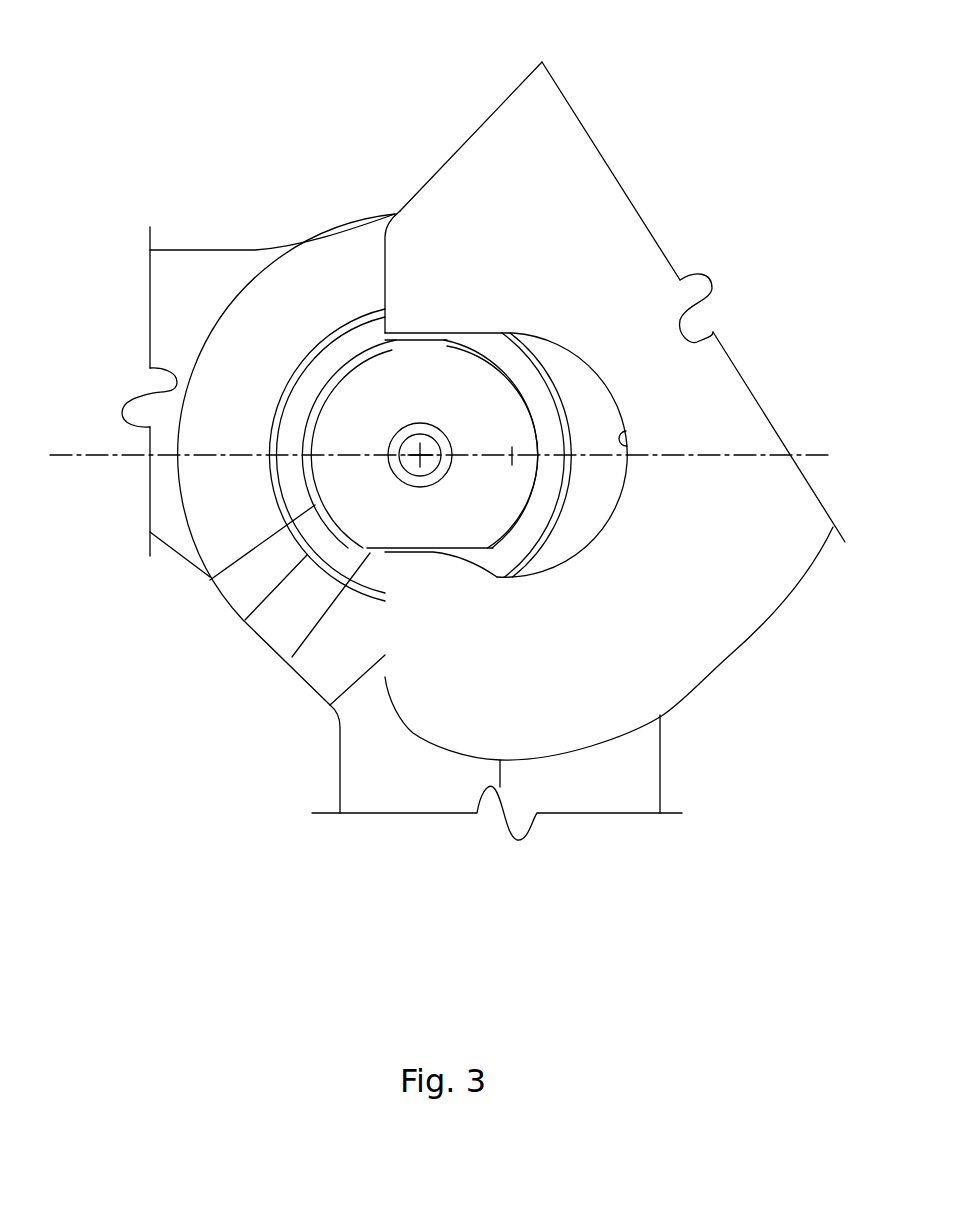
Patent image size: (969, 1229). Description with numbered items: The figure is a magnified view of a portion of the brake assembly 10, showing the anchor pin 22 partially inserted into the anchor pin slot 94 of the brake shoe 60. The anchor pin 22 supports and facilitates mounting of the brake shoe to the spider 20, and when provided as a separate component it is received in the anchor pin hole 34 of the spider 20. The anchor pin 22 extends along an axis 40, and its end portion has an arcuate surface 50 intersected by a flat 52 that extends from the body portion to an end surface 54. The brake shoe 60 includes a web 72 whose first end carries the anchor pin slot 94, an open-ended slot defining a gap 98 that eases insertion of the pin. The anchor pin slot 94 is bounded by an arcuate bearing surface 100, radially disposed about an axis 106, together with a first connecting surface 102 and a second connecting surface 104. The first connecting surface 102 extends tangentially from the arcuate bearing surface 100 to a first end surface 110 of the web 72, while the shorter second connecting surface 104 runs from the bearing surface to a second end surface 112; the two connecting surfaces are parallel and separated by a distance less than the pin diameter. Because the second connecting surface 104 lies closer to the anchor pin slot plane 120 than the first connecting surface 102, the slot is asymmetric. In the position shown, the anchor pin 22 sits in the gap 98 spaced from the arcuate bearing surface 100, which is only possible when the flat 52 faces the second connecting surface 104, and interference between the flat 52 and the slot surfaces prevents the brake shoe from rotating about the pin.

The brake assembly 10 is at (263, 97).
The spider 20 is at (183, 250).
The anchor pin 22 is at (273, 393).
The anchor pin hole 34 is at (245, 620).
The axis 40 is at (420, 455).
The arcuate surface 50 is at (210, 580).
The flat 52 is at (292, 657).
The end surface 54 is at (380, 337).
The brake shoe 60 is at (621, 643).
The web 72 is at (730, 655).
The anchor pin slot 94 is at (587, 353).
The gap 98 is at (363, 382).
The arcuate bearing surface 100 is at (632, 443).
The first connecting surface 102 is at (447, 342).
The second connecting surface 104 is at (425, 548).
The axis 106 is at (512, 455).
The first end surface 110 is at (383, 247).
The second end surface 112 is at (340, 727).
The anchor pin slot plane 120 is at (73, 453).